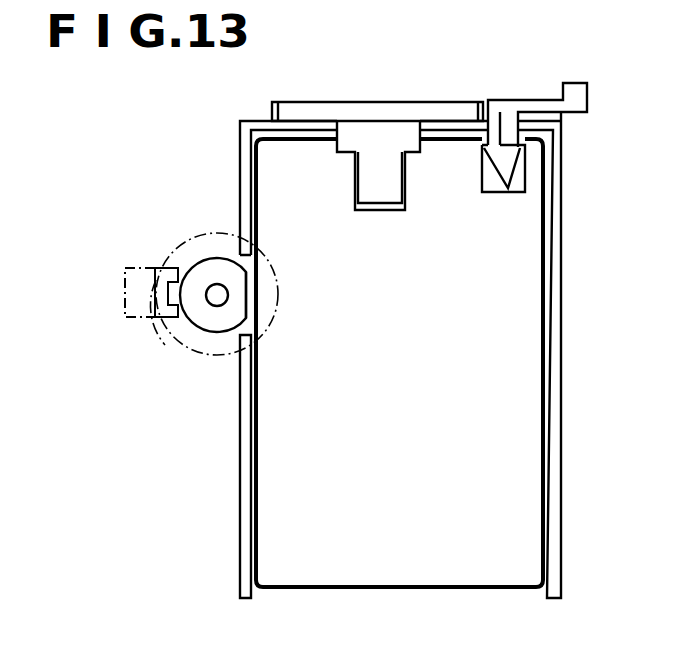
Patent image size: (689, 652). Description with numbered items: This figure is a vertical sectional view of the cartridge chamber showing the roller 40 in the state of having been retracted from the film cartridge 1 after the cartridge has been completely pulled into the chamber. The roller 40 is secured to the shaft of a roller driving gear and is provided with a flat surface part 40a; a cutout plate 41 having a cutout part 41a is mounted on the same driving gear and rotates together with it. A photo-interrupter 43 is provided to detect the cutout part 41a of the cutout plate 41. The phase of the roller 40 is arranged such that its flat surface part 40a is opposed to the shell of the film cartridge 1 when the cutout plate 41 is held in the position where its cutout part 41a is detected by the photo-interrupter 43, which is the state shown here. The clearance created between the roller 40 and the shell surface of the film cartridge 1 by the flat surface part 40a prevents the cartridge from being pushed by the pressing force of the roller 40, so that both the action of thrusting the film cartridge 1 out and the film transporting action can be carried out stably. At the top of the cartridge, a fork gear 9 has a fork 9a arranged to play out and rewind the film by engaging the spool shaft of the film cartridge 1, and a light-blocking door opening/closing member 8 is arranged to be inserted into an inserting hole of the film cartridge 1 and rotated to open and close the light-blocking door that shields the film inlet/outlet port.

The film cartridge 1 is at (503, 502).
The light-blocking door opening/closing member 8 is at (506, 125).
The fork gear 9 is at (362, 110).
The fork 9a is at (384, 193).
The roller 40 is at (215, 272).
The flat surface part 40a is at (245, 288).
The cutout plate 41 is at (216, 345).
The cutout part 41a is at (155, 338).
The photo-interrupter 43 is at (125, 296).